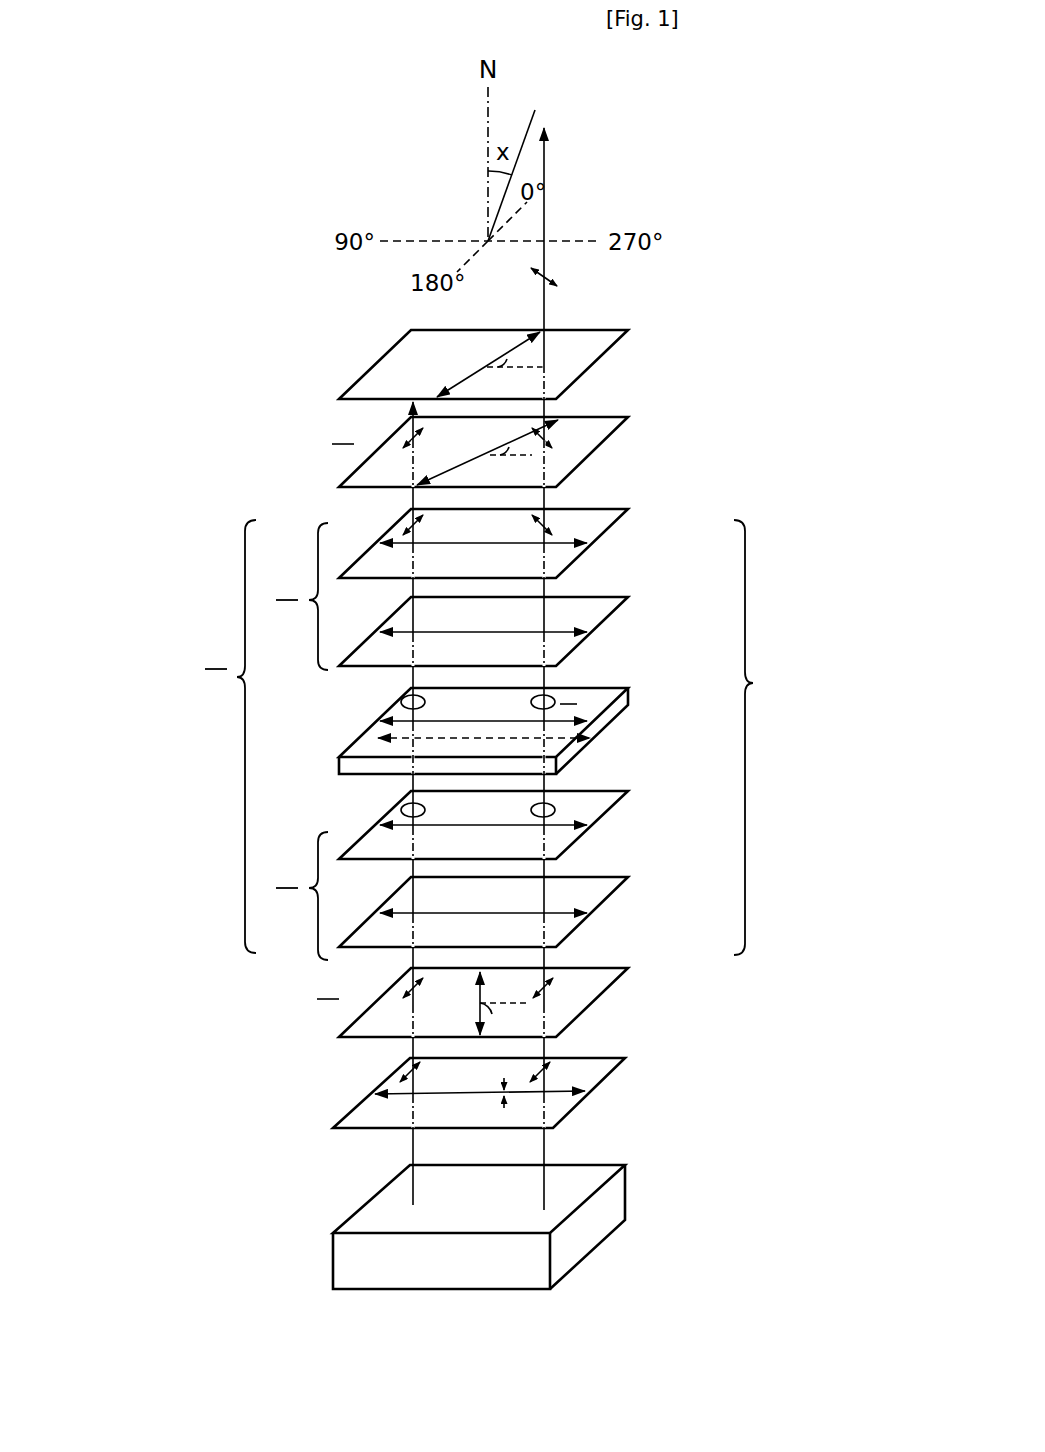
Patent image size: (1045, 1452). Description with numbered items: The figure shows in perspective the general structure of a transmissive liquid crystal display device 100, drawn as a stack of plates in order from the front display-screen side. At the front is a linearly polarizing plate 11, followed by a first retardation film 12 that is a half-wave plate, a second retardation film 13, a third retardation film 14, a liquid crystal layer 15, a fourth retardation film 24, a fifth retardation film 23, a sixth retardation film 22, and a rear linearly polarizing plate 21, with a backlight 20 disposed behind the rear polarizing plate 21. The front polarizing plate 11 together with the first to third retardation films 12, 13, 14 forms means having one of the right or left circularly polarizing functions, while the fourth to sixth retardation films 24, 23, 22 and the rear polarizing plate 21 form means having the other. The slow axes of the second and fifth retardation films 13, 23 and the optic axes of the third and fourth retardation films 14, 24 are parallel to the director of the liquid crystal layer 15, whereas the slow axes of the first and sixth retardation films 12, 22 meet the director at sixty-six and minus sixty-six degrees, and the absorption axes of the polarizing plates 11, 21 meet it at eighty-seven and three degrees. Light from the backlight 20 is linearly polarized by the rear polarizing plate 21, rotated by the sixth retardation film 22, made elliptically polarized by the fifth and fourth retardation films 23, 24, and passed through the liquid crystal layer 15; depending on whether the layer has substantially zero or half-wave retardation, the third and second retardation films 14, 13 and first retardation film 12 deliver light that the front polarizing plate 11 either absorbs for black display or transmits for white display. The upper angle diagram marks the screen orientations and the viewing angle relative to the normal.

The liquid crystal display device 100 is at (722, 230).
The linearly polarizing plate 11 is at (606, 331).
The first retardation film 12 is at (606, 418).
The second retardation film 13 is at (606, 510).
The third retardation film 14 is at (606, 598).
The liquid crystal layer 15 is at (606, 689).
The fourth retardation film 24 is at (606, 792).
The fifth retardation film 23 is at (606, 878).
The sixth retardation film 22 is at (606, 969).
The linearly polarizing plate 21 is at (606, 1059).
The backlight 20 is at (600, 1166).